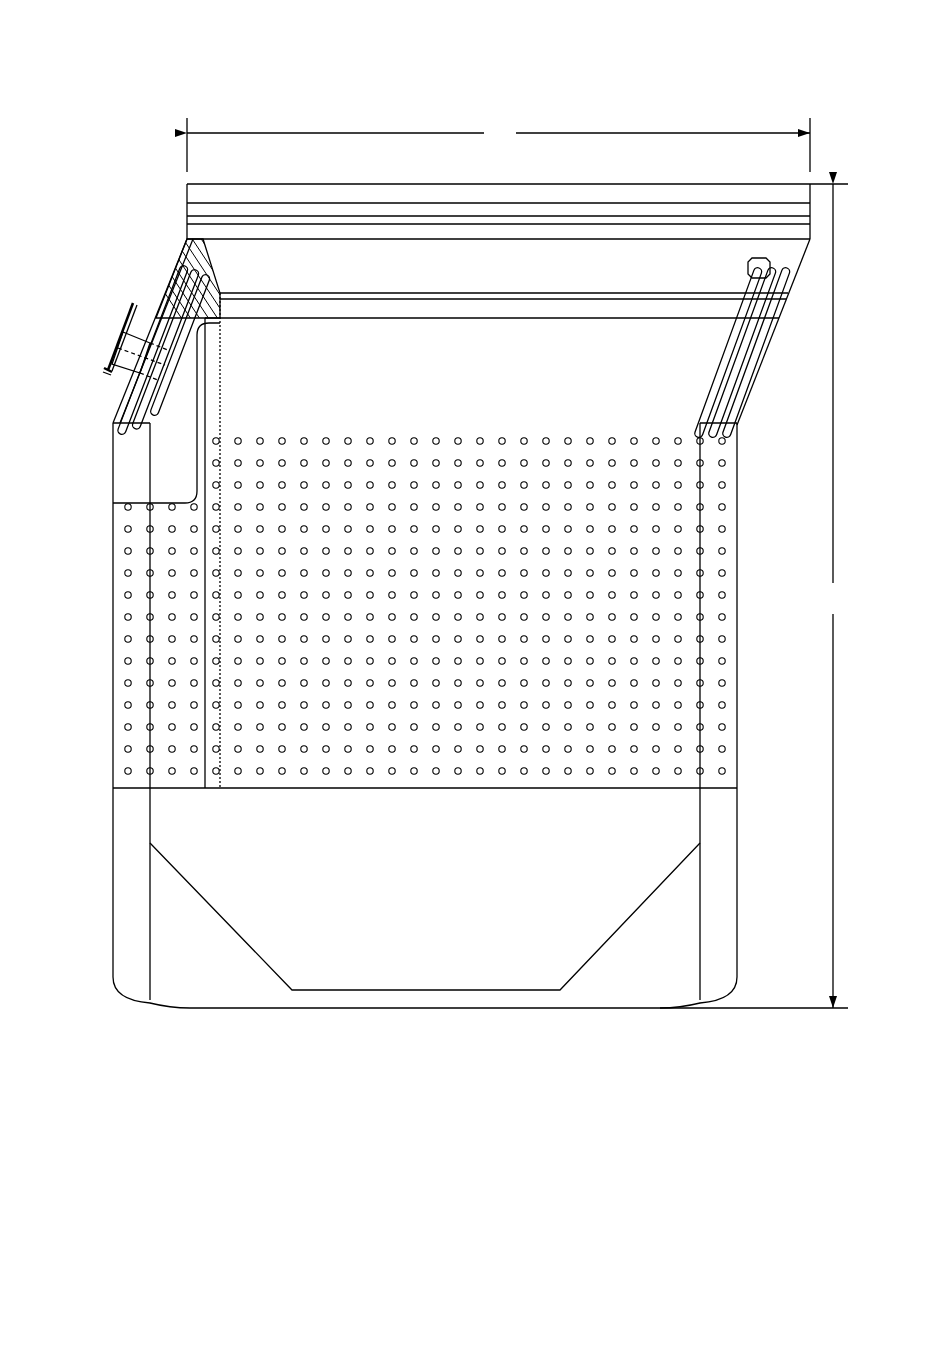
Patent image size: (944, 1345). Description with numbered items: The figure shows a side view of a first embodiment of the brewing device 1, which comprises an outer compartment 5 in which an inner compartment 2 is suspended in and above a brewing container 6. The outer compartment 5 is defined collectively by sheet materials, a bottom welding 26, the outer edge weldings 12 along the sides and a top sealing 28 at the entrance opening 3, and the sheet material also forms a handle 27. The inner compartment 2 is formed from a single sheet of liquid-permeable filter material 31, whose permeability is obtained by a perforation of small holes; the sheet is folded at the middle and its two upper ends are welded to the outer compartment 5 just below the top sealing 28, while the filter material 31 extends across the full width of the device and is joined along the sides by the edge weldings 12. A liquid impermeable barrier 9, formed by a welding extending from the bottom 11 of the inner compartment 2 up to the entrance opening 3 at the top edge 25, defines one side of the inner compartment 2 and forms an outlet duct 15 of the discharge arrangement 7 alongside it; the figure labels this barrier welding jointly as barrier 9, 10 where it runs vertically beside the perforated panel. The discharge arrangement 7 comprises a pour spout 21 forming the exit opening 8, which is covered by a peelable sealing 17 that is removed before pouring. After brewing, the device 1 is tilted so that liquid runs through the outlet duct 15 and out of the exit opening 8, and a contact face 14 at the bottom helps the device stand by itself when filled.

The brewing device 1 is at (684, 124).
The inner compartment 2 is at (388, 606).
The entrance opening 3 is at (498, 156).
The outer compartment 5 is at (591, 775).
The brewing container 6 is at (483, 903).
The discharge arrangement 7 is at (134, 661).
The exit opening 8 is at (125, 353).
The liquid impermeable barrier 9 is at (188, 248).
The side seam 10 is at (212, 540).
The bottom 11 is at (250, 788).
The outer edge welding 12 is at (175, 288).
The contact face 14 is at (292, 1012).
The outlet duct 15 is at (178, 540).
The peelable sealing 17 is at (127, 313).
The pour spout 21 is at (120, 373).
The top edge 25 is at (410, 182).
The bottom welding 26 is at (367, 1002).
The handle 27 is at (753, 320).
The top sealing 28 is at (287, 277).
The filter material 31 is at (337, 672).